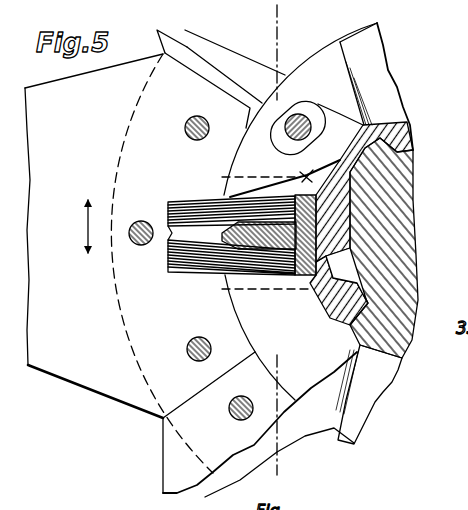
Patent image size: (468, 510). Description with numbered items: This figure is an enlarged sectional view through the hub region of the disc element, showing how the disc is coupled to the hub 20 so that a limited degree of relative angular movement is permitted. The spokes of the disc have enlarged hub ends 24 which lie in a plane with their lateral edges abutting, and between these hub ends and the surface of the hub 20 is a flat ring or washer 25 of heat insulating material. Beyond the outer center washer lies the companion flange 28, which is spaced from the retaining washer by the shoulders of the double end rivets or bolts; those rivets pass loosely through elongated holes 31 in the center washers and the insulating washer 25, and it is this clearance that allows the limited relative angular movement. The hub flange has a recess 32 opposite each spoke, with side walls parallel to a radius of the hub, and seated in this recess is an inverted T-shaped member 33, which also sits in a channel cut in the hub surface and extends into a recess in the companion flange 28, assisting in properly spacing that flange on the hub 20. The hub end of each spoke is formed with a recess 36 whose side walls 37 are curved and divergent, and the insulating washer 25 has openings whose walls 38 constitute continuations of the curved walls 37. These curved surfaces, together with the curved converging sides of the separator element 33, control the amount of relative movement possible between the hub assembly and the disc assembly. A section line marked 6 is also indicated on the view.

The hub 20 is at (398, 343).
The enlarged hub ends 24 is at (158, 352).
The flat ring or washer of heat insulating material 25 is at (256, 125).
The companion flange 28 is at (310, 185).
The elongated holes 31 is at (303, 100).
The recess 32 is at (281, 271).
The inverted T-shaped member 33 is at (213, 270).
The recess 36 is at (172, 240).
The side walls 37 is at (213, 195).
The walls 38 is at (300, 172).
The section line 6- 6 is at (276, 43).